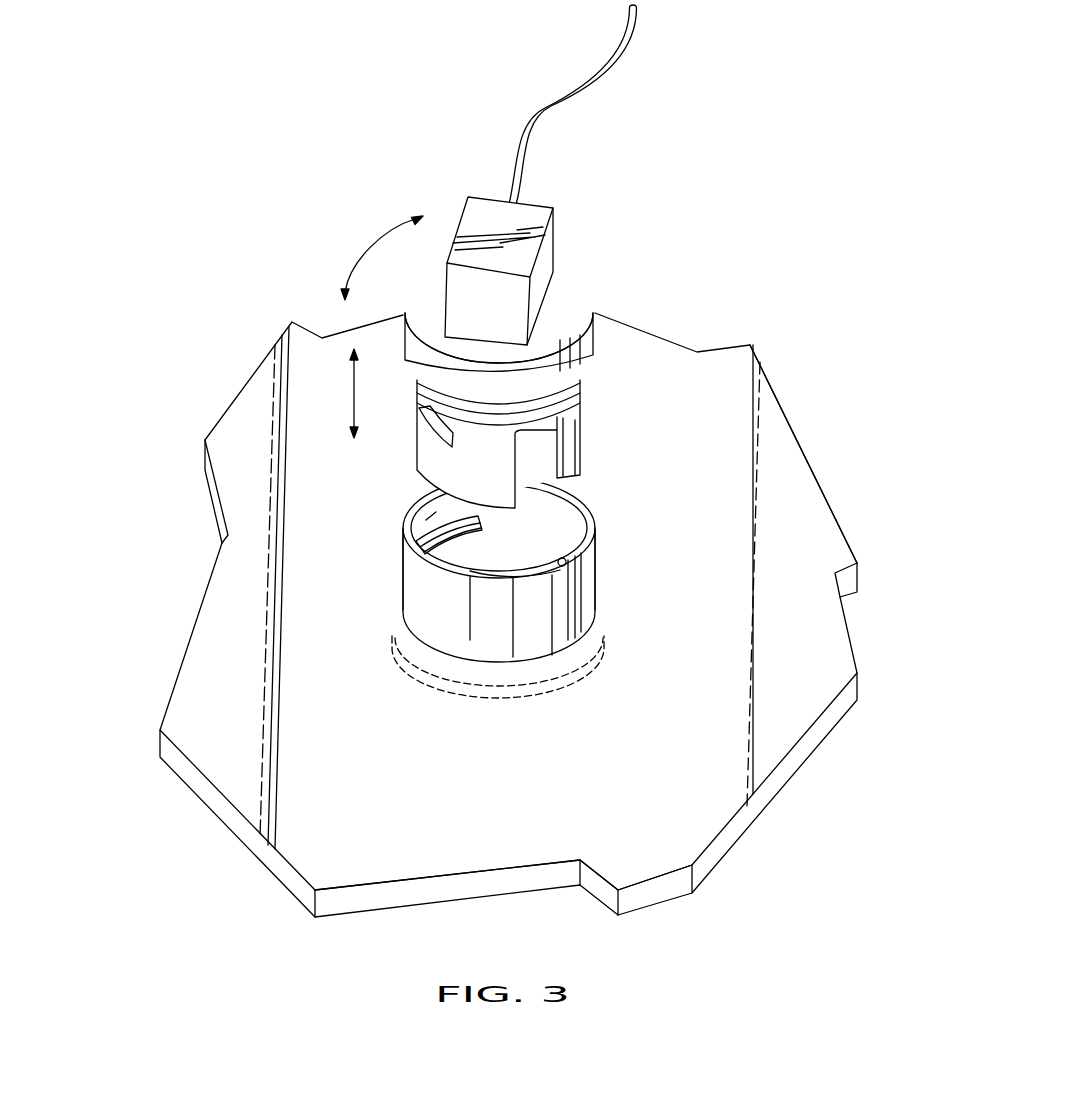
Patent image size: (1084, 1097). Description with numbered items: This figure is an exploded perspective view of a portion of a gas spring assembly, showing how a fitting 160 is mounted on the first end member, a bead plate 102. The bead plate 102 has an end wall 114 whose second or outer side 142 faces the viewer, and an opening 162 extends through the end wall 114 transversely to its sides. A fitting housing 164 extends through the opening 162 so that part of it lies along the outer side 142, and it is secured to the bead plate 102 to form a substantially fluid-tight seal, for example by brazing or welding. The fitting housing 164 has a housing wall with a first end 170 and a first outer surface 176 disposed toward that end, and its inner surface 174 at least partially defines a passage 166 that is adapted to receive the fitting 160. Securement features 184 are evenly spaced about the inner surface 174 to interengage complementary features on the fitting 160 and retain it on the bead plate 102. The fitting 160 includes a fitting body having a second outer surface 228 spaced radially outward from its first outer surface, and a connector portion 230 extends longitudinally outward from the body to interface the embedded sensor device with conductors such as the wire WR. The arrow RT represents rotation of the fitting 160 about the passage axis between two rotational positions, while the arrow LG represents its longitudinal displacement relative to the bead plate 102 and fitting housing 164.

The bead plate 102 is at (765, 337).
The end wall 114 is at (786, 480).
The second or outer side 142 is at (686, 731).
The fitting 160 is at (581, 263).
The opening 162 is at (470, 660).
The fitting housing 164 is at (390, 562).
The passage 166 is at (556, 518).
The first end 170 is at (608, 570).
The inner surface 174 is at (427, 494).
The first outer surface 176 is at (582, 607).
The securement feature 184 is at (430, 521).
The second outer surface 228 is at (596, 318).
The connector portion 230 is at (495, 197).
The wire WR is at (624, 64).
The arrow (rotation) RT is at (367, 240).
The arrow (longitudinal displacement) LG is at (353, 390).